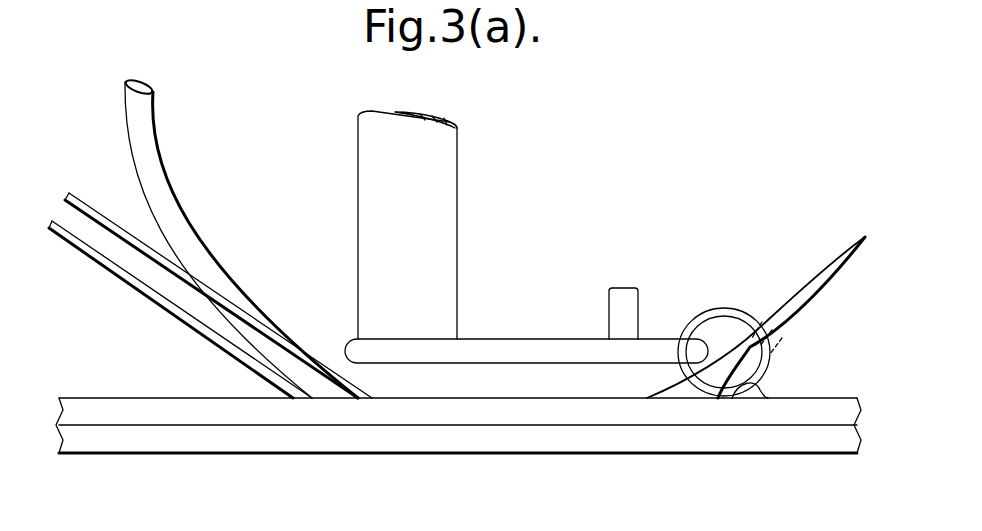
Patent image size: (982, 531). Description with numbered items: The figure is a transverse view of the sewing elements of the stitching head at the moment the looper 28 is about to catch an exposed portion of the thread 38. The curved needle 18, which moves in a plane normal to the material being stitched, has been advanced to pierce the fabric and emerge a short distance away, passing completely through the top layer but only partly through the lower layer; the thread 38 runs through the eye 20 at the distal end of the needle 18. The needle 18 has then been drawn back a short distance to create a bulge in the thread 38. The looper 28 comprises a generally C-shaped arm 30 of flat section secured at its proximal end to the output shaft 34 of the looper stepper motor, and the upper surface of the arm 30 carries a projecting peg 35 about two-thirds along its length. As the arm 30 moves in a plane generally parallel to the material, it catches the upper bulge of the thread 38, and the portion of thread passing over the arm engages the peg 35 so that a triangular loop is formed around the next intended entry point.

The curved needle 18 is at (803, 290).
The eye 20 is at (790, 345).
The looper 28 is at (503, 150).
The C-shaped arm 30 is at (494, 338).
The output shaft 34 is at (358, 212).
The projecting peg 35 is at (608, 305).
The thread 38 is at (128, 280).